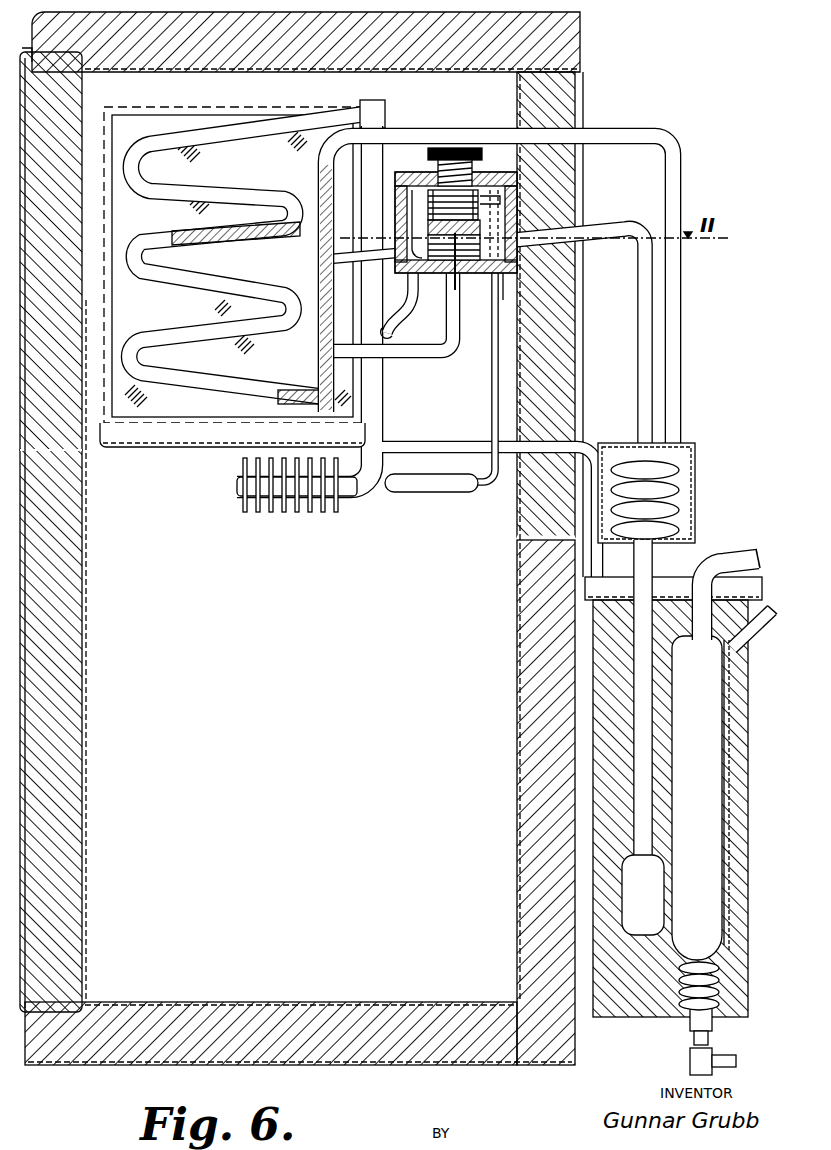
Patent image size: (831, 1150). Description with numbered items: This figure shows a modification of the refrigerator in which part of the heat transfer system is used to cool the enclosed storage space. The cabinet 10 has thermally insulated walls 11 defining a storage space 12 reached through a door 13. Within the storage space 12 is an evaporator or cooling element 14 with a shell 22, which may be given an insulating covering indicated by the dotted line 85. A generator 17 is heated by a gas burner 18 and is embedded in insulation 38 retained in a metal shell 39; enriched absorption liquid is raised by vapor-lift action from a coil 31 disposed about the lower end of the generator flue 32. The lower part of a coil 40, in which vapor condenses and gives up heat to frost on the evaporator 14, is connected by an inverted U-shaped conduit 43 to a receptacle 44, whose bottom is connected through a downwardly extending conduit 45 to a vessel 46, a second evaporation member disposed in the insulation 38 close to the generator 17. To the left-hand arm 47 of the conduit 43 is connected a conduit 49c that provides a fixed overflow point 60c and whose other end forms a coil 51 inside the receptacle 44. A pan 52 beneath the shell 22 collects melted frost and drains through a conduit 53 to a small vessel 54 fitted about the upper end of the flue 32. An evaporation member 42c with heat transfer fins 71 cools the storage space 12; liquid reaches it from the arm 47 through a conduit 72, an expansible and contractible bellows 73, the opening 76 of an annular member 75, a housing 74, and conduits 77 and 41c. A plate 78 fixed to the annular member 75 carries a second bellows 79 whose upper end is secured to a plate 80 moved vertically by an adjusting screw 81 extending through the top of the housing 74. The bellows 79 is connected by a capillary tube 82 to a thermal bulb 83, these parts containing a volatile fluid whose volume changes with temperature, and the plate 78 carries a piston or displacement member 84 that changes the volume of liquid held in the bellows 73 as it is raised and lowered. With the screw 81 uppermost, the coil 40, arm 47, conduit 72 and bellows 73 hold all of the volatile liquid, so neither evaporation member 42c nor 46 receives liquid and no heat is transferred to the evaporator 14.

The cabinet 10 is at (322, 538).
The thermally insulated walls 11 is at (586, 42).
The storage space 12 is at (316, 711).
The door 13 is at (82, 640).
The evaporator or cooling element 14 is at (130, 106).
The generator 17 is at (686, 808).
The gas burner 18 is at (712, 1060).
The shell 22 is at (188, 115).
The coil 31 is at (720, 992).
The generator flue 32 is at (748, 556).
The insulation 38 is at (745, 700).
The metal shell 39 is at (748, 741).
The coil 40 is at (228, 133).
The conduit 41c is at (382, 412).
The evaporation member 42c is at (276, 502).
The inverted U-shaped conduit 43 is at (650, 134).
The receptacle 44 is at (695, 458).
The downwardly extending conduit 45 is at (634, 555).
The vessel 46 is at (642, 935).
The left-hand arm 47 is at (330, 259).
The conduit 49c is at (642, 400).
The coil 51 is at (680, 490).
The pan 52 is at (182, 447).
The conduit 53 is at (489, 496).
The small vessel 54 is at (672, 577).
The fixed overflow point 60c is at (624, 240).
The heat transfer fins 71 is at (270, 512).
The conduit 72 is at (434, 362).
The bellows 73 is at (419, 283).
The housing 74 is at (504, 290).
The annular member 75 is at (462, 296).
The opening 76 is at (418, 192).
The conduit 77 is at (395, 332).
The plate 78 is at (484, 190).
The second bellows 79 is at (490, 186).
The plate 80 is at (418, 190).
The adjusting screw 81 is at (456, 148).
The capillary tube 82 is at (493, 390).
The thermal bulb 83 is at (456, 493).
The piston or displacement member 84 is at (460, 262).
The insulating covering 85 is at (246, 108).